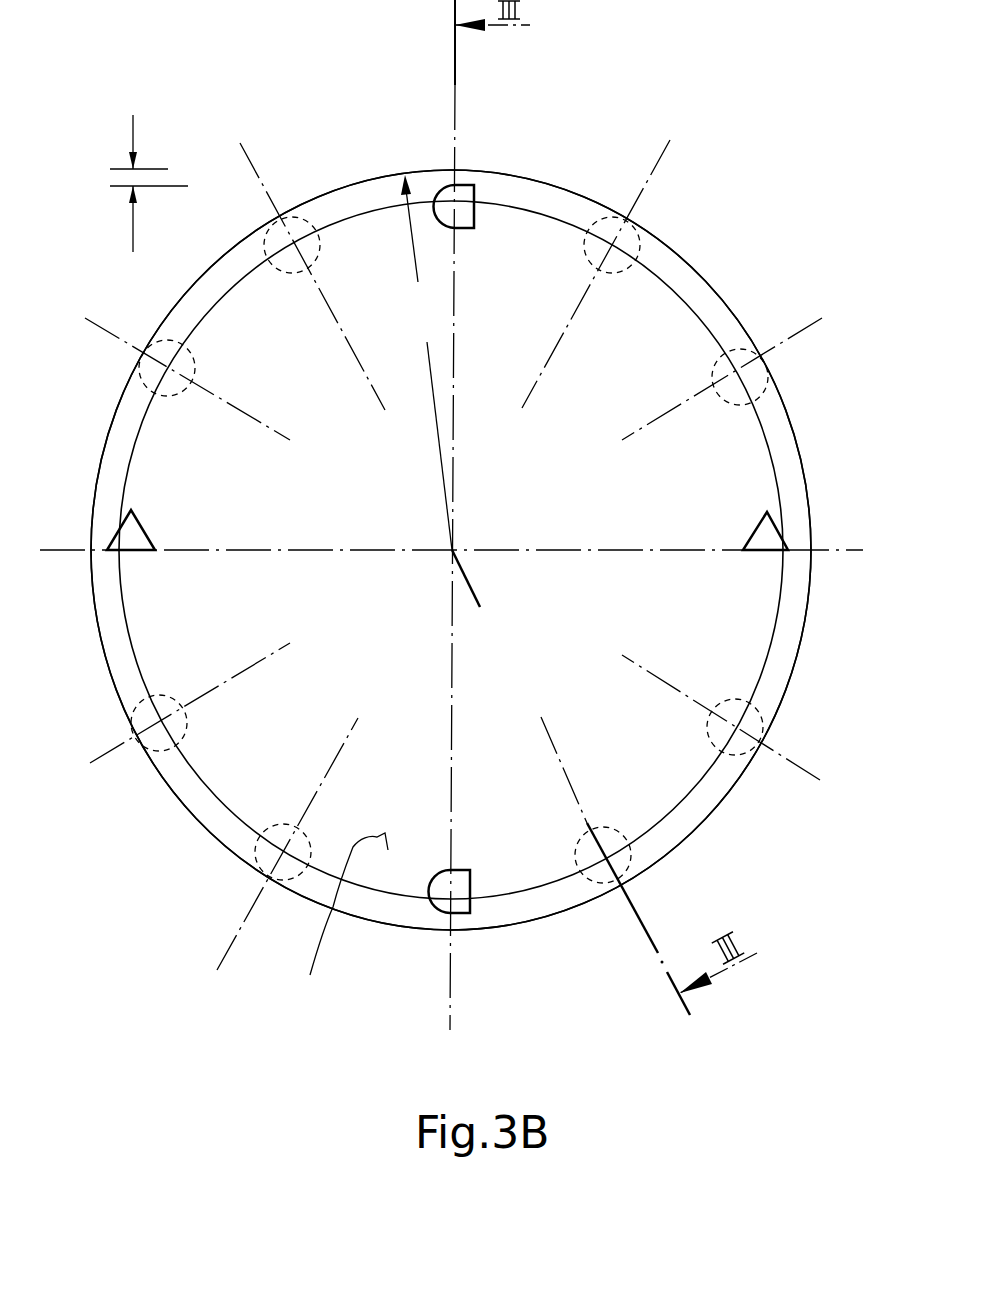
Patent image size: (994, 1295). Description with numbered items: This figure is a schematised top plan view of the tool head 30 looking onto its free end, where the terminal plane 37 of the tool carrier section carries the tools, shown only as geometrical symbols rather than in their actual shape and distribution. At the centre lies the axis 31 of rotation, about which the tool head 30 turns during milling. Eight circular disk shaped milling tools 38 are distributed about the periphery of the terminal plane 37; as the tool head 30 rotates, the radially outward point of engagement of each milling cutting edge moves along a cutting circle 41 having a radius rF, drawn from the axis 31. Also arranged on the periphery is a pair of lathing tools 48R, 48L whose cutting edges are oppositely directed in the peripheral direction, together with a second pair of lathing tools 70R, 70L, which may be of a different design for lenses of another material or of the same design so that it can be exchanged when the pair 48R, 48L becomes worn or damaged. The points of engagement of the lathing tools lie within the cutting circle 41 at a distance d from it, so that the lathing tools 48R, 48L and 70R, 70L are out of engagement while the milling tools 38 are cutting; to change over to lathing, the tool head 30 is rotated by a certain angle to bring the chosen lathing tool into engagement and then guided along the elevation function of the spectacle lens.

The tool head 30 is at (722, 280).
The cutting circle 41 is at (327, 192).
The lathing tool 48R is at (490, 176).
The lathing tool 48L is at (423, 925).
The lathing tool 70R is at (105, 516).
The lathing tool 70L is at (798, 524).
The axis of rotation 31 is at (452, 550).
The terminal plane 37 is at (341, 920).
The milling tool 38 is at (592, 892).
The distance d is at (143, 178).
The radius rF is at (426, 362).